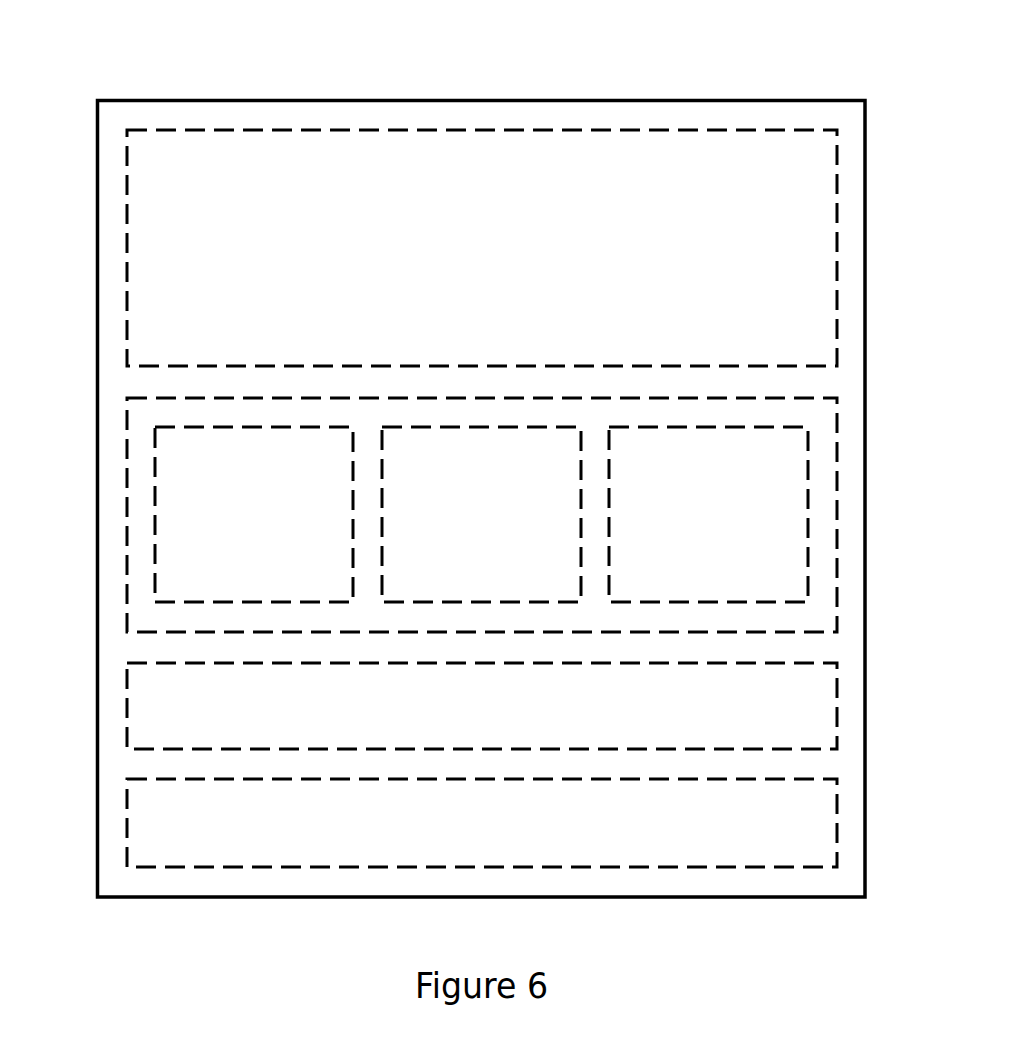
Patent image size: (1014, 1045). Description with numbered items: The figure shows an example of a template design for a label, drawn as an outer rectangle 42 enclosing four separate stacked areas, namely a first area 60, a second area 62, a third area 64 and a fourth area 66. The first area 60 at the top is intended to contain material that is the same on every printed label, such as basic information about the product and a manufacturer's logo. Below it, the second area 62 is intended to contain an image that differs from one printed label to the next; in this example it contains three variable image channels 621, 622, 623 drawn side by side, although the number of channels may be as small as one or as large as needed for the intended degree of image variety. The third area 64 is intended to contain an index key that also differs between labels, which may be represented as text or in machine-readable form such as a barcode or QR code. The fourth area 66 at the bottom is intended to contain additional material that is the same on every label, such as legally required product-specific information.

The display panel 42 is at (743, 100).
The first area 60 is at (837, 286).
The second area 62 is at (837, 460).
The variable image channel 621 is at (155, 467).
The variable image channel 622 is at (382, 554).
The variable image channel 623 is at (808, 577).
The third area 64 is at (837, 700).
The fourth area 66 is at (837, 817).